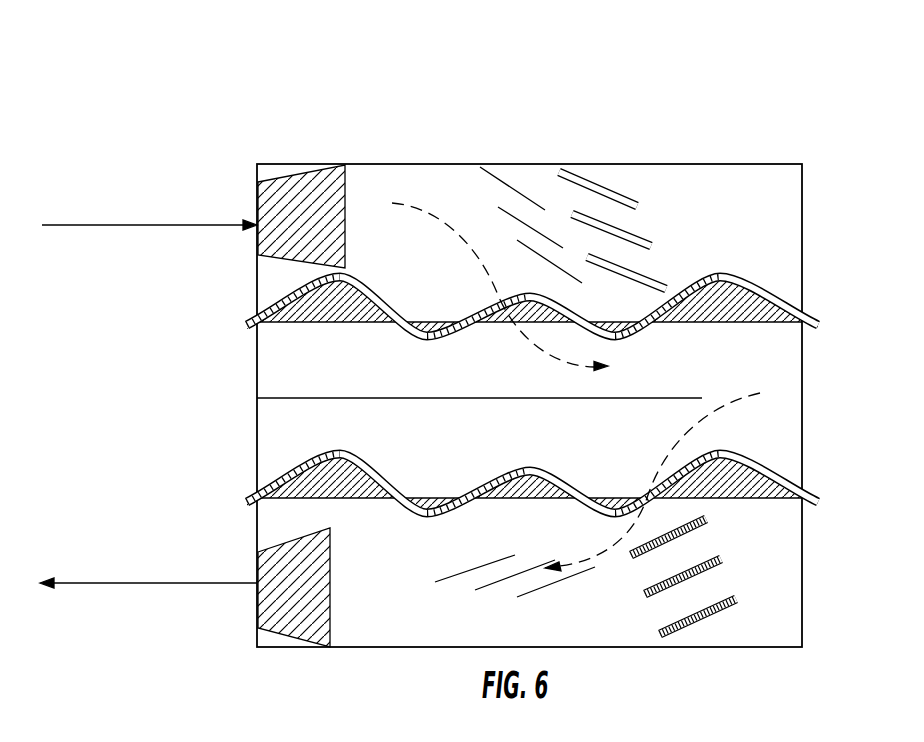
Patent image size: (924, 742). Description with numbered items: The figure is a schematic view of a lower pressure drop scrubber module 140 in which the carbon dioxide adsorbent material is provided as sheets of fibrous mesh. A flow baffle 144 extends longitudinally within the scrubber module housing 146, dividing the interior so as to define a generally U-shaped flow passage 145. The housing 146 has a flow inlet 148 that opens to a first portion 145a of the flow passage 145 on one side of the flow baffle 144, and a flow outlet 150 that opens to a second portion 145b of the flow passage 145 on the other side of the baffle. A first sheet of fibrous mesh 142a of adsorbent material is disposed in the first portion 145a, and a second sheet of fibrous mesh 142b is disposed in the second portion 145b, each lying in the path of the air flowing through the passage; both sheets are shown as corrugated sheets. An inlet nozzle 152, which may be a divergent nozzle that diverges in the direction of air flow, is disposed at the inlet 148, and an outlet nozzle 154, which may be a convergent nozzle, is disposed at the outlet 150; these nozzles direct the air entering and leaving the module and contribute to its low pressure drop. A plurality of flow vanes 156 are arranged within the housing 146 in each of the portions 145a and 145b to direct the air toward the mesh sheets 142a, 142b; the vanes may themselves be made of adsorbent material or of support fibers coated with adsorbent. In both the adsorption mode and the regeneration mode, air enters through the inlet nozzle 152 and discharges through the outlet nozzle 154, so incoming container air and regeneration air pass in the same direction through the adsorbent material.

The scrubber module 140 is at (321, 77).
The first sheet of fibrous mesh 142a is at (714, 276).
The second sheet of fibrous mesh 142b is at (373, 468).
The flow baffle 144 is at (418, 397).
The flow passage 145 is at (749, 370).
The first portion of the flow passage 145a is at (490, 206).
The second portion of the flow passage 145b is at (528, 540).
The scrubber module housing 146 is at (257, 437).
The flow inlet 148 is at (257, 248).
The flow outlet 150 is at (257, 571).
The inlet nozzle 152 is at (283, 178).
The outlet nozzle 154 is at (283, 648).
The flow vanes 156 is at (646, 243).